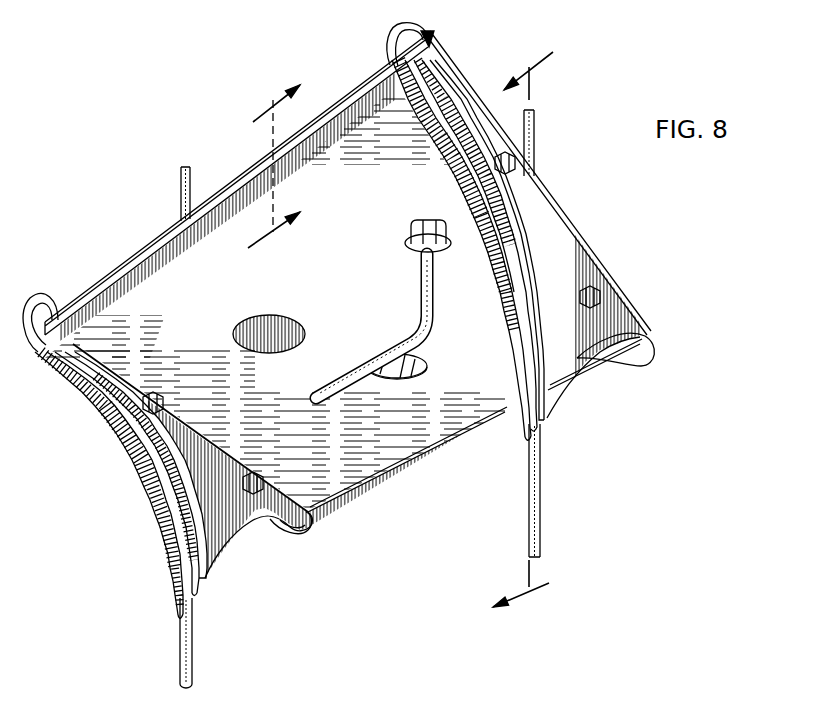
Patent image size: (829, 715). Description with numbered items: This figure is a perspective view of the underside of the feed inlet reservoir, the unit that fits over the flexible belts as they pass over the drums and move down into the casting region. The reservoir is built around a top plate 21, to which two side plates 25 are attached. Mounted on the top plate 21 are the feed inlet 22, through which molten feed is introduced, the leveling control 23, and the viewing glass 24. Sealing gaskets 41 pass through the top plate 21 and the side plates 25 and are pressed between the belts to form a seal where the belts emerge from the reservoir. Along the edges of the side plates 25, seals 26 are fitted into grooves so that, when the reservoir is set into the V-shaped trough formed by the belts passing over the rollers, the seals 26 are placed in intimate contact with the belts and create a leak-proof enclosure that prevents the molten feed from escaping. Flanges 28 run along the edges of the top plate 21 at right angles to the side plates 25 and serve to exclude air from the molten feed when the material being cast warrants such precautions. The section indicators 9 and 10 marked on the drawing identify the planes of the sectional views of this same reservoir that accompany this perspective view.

The section line 9- 9 is at (523, 334).
The section line 10- 10 is at (274, 171).
The top plate 21 is at (156, 288).
The feed inlet 22 is at (284, 336).
The leveling control 23 is at (420, 322).
The viewing glass 24 is at (418, 375).
The side plate 25 is at (533, 222).
The seal 26 is at (396, 38).
The flange 28 is at (115, 292).
The sealing gasket 41 is at (174, 168).